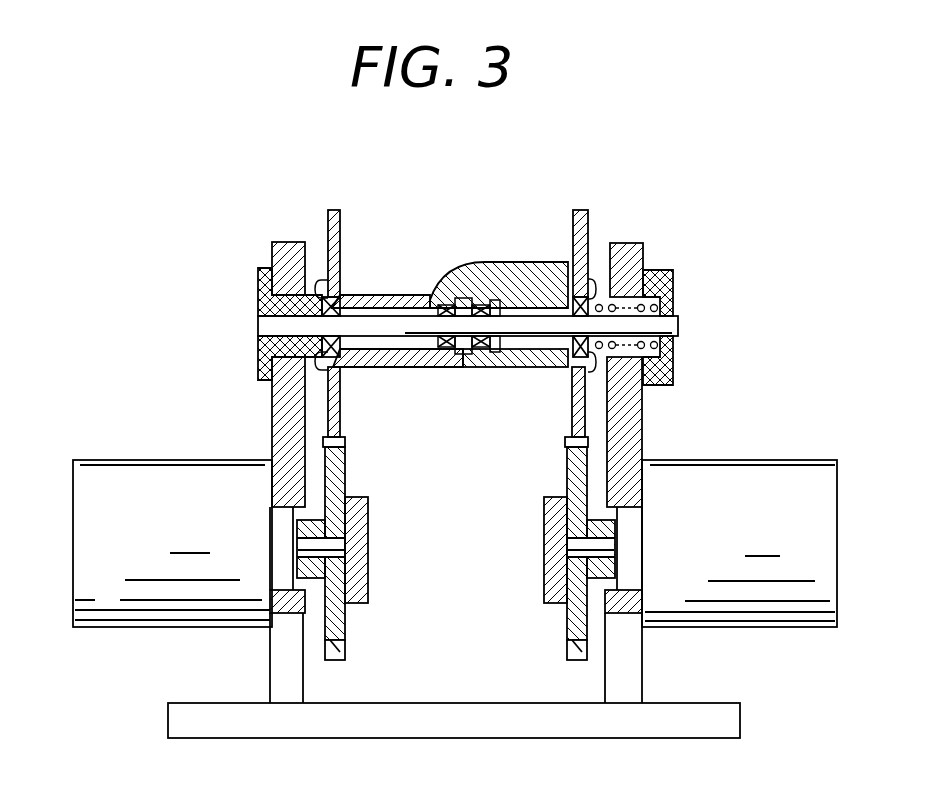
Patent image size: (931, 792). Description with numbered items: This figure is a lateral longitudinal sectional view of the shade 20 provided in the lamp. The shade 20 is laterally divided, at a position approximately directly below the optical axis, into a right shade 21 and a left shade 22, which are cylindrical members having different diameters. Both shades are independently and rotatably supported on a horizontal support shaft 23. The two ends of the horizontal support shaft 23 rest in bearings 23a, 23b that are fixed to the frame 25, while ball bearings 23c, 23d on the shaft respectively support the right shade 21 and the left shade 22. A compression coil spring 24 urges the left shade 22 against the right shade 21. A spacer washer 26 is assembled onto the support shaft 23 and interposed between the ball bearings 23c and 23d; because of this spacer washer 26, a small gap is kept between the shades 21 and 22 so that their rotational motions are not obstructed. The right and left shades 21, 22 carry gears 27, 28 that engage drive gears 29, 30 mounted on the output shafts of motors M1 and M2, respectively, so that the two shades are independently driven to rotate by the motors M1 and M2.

The shade 20 is at (450, 242).
The right shade 21 is at (365, 290).
The left shade 22 is at (499, 272).
The horizontal support shaft 23 is at (680, 330).
The bearing 23a is at (258, 300).
The bearing 23b is at (684, 309).
The ball bearing 23c is at (322, 290).
The ball bearing 23d is at (462, 298).
The compression coil spring 24 is at (672, 275).
The frame 25 is at (287, 242).
The spacer washer 26 is at (457, 367).
The gear 27 is at (342, 414).
The gear 28 is at (573, 418).
The drive gear 29 is at (347, 483).
The drive gear 30 is at (570, 478).
The motor M1 is at (163, 460).
The motor M2 is at (790, 475).